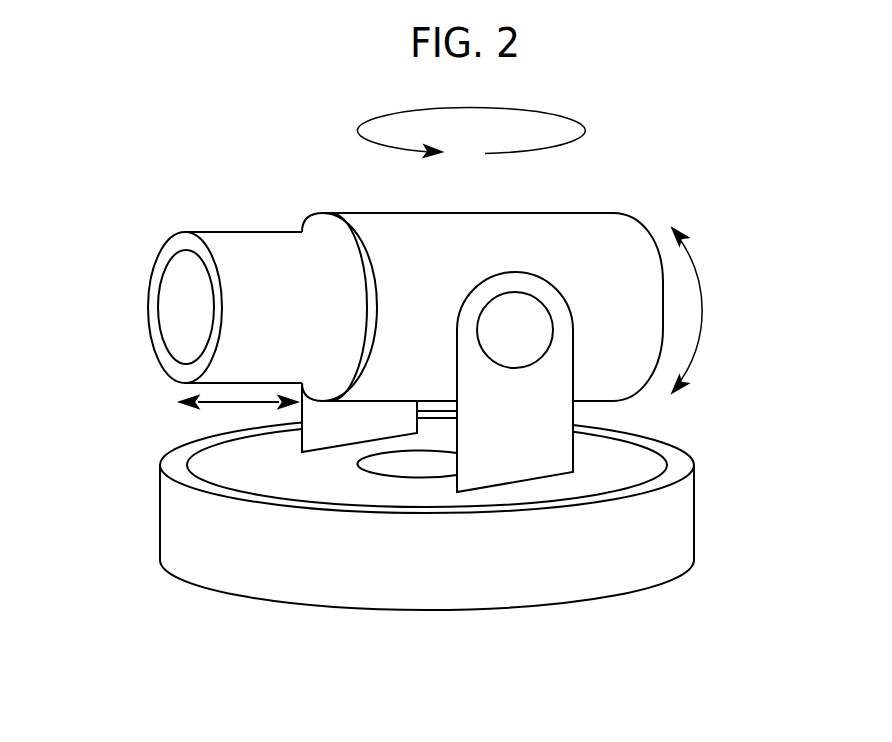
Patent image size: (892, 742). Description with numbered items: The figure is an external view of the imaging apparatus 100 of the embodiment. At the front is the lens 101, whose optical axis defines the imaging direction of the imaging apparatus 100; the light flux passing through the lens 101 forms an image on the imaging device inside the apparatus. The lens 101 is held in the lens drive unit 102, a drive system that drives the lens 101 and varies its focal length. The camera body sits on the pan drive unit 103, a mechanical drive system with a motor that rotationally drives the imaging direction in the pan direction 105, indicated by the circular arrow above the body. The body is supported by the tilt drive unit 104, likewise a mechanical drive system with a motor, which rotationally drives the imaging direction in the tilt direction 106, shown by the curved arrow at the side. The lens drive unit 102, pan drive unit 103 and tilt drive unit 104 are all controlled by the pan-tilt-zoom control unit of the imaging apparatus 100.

The imaging apparatus 100 is at (600, 235).
The lens 101 is at (172, 297).
The lens drive unit 102 is at (260, 250).
The pan drive unit 103 is at (422, 467).
The tilt drive unit 104 is at (503, 312).
The pan direction 105 is at (380, 155).
The tilt direction 106 is at (704, 303).